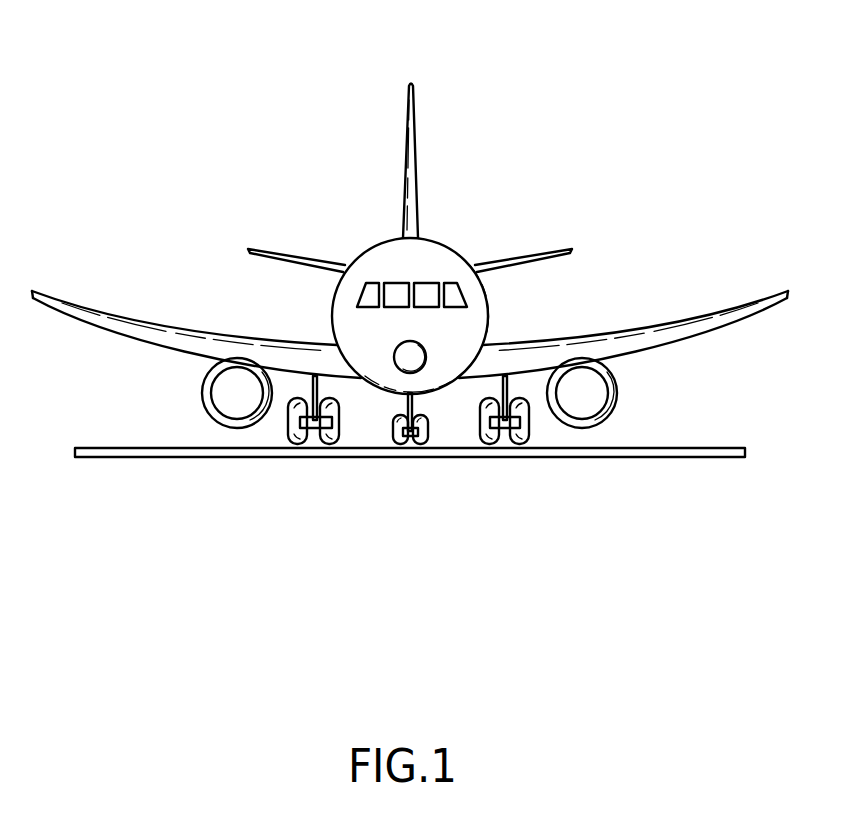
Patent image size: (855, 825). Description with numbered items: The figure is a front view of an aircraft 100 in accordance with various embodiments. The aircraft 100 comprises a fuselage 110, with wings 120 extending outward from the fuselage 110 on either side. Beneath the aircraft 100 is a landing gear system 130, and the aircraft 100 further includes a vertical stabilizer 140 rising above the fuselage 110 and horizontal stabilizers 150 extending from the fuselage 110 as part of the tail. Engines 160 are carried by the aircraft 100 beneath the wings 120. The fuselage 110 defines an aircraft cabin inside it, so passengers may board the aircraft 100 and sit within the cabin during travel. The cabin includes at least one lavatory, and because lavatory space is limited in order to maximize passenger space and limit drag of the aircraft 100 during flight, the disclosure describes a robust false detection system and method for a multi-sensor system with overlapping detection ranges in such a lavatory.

The aircraft 100 is at (268, 152).
The fuselage 110 is at (392, 257).
The wings 120 is at (216, 345).
The landing gear system 130 is at (348, 470).
The vertical stabilizer 140 is at (413, 108).
The horizontal stabilizers 150 is at (340, 263).
The engines 160 is at (617, 393).